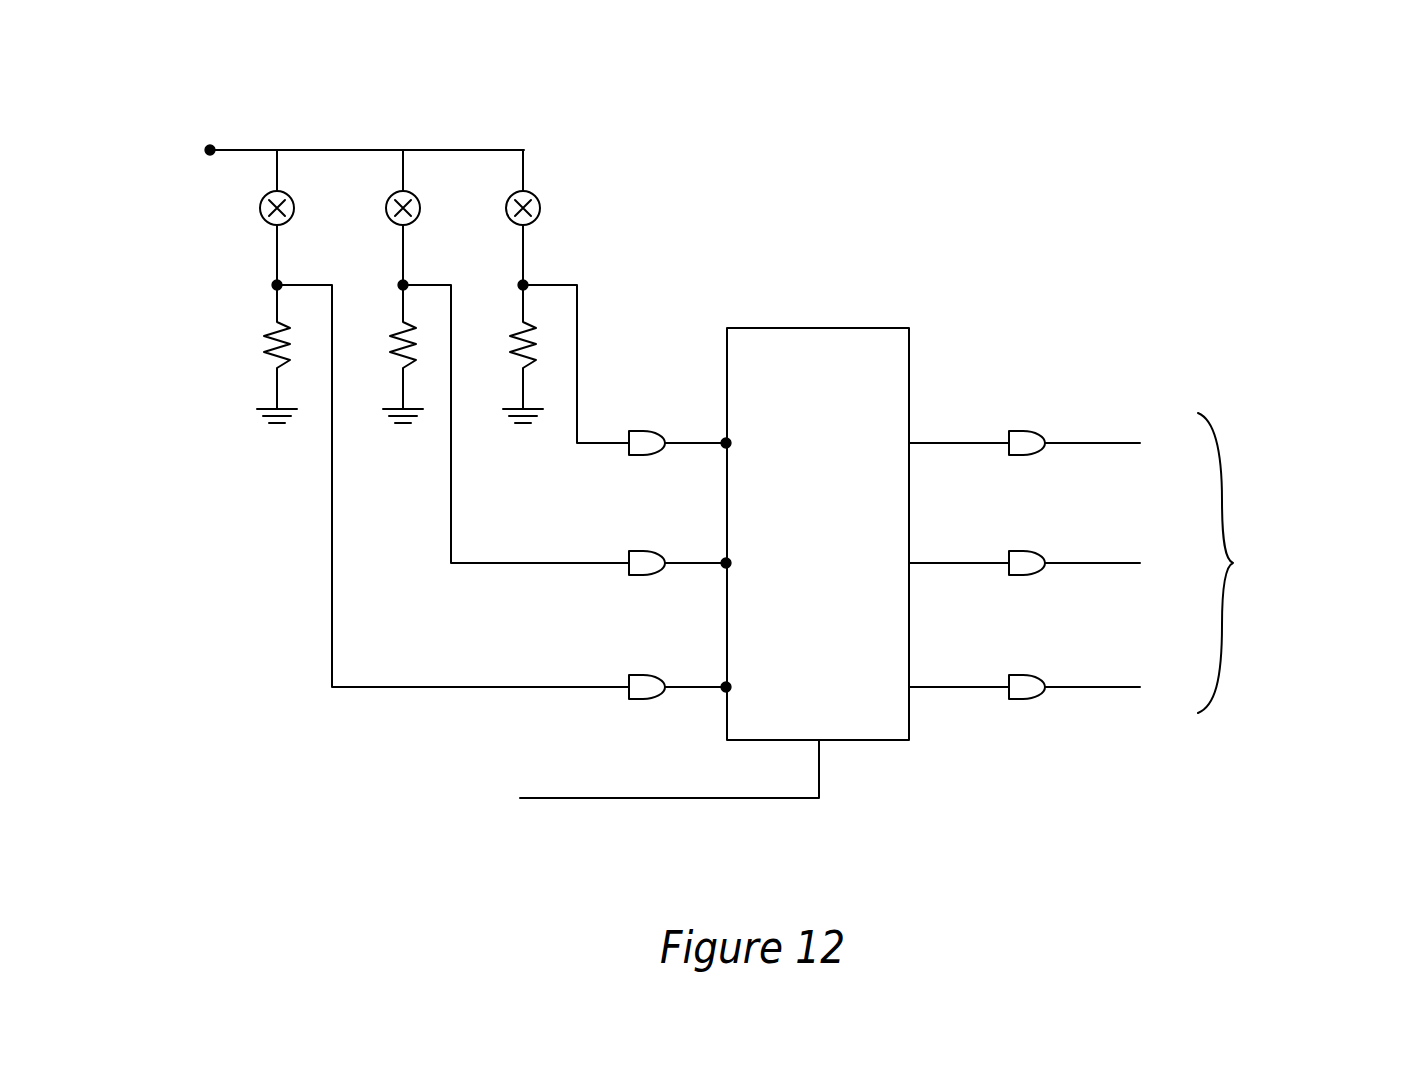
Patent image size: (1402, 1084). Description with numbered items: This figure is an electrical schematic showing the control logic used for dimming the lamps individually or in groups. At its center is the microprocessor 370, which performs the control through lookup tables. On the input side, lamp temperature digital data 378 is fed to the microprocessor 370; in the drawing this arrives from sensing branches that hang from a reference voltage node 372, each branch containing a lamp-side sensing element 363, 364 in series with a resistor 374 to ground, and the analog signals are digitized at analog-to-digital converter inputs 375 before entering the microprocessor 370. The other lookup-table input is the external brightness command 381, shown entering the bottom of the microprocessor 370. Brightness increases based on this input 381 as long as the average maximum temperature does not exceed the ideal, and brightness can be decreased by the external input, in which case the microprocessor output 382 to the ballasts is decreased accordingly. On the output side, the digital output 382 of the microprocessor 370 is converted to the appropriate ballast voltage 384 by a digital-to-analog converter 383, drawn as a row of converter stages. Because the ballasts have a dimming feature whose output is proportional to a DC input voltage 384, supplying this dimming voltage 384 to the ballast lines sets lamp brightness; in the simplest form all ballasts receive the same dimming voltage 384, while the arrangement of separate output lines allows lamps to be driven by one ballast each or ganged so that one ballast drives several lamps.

The light source 363 is at (403, 192).
The light source 364 is at (273, 226).
The microprocessor 370 is at (848, 407).
The reference voltage node 372 is at (208, 150).
The resistor 374 is at (268, 408).
The analog-to-digital converter input 375 is at (643, 693).
The lamp temperature digital data 378 is at (640, 564).
The external brightness command 381 is at (787, 800).
The digital output 382 is at (928, 557).
The digital-to-analog converter 383 is at (1010, 566).
The ballast voltage 384 is at (1148, 553).